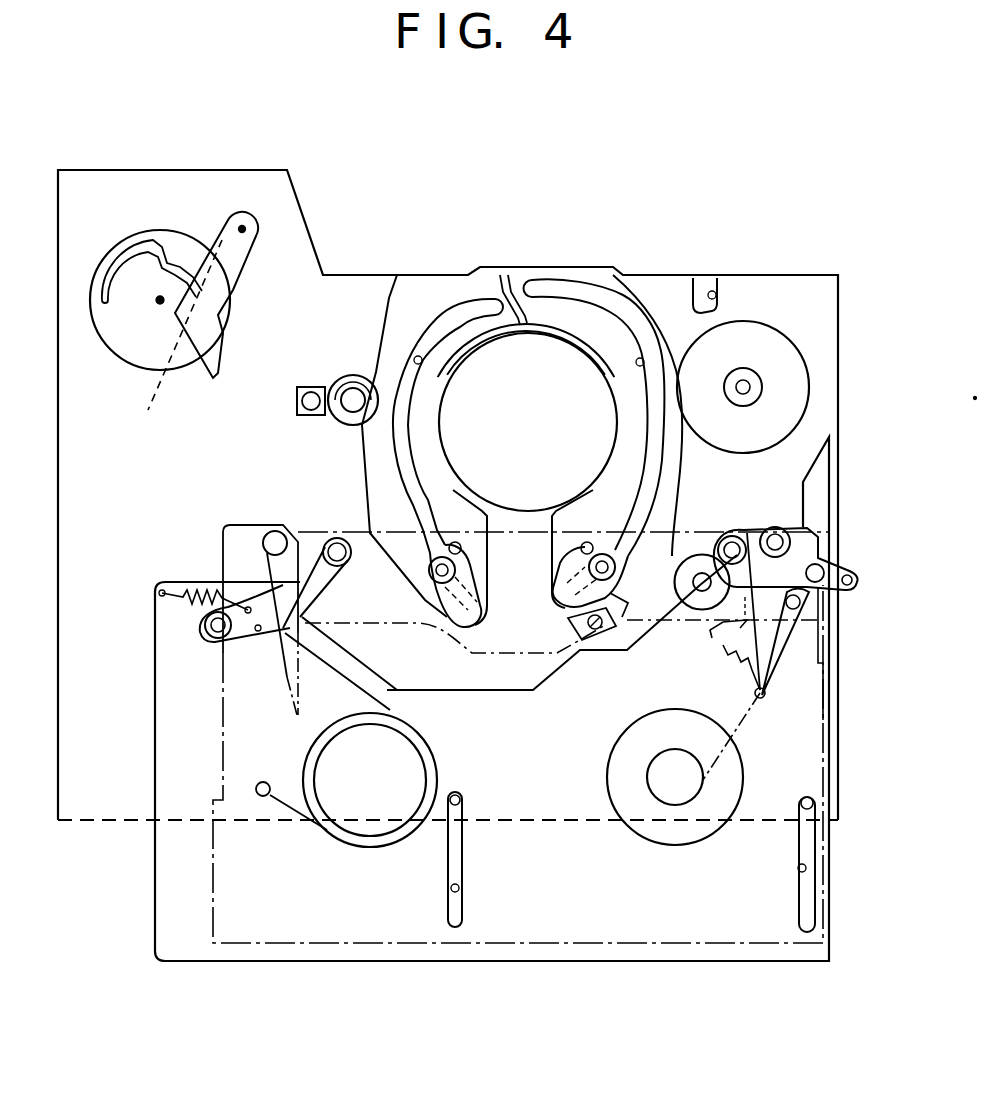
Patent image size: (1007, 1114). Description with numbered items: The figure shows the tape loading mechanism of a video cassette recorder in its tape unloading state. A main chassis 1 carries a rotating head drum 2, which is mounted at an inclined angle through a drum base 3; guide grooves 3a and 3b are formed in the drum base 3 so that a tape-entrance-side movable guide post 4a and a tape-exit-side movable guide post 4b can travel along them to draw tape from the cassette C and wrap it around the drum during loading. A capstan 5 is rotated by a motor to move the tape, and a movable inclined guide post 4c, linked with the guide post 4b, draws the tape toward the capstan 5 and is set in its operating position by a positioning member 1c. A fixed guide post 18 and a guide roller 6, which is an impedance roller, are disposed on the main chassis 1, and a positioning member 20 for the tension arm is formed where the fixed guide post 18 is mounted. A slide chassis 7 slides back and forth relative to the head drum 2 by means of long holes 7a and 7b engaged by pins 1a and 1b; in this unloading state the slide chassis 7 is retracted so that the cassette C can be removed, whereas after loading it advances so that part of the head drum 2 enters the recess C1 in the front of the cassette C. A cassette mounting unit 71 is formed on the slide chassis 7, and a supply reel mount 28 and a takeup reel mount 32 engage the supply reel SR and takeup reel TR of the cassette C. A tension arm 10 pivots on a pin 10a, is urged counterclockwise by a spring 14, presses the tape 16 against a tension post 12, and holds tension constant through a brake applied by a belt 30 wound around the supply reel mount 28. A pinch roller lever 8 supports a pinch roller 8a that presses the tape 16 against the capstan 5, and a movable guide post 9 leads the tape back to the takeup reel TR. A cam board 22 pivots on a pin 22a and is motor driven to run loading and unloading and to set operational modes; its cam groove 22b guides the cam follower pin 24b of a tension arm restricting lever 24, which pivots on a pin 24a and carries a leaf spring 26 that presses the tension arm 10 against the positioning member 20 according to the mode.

The main chassis 1 is at (840, 315).
The pin 1a is at (462, 800).
The pin 1b is at (801, 803).
The positioning member 1c is at (712, 292).
The rotating head drum 2 is at (560, 345).
The drum base 3 is at (418, 290).
The guide groove 3a is at (422, 362).
The guide groove 3b is at (636, 364).
The tape-entrance-side movable guide post 4a is at (458, 566).
The tape-exit-side movable guide post 4b is at (600, 553).
The movable inclined guide post 4c is at (604, 638).
The capstan 5 is at (745, 385).
The guide roller 6 is at (353, 384).
The slide chassis 7 is at (652, 962).
The long hole 7a is at (462, 888).
The long hole 7b is at (800, 870).
The pinch roller lever 8 is at (778, 655).
The pinch roller 8a is at (700, 568).
The movable guide post 9 is at (740, 544).
The tension arm 10 is at (282, 540).
The pin 10a is at (203, 638).
The tension post 12 is at (347, 566).
The spring 14 is at (190, 592).
The tape 16 is at (295, 668).
The fixed guide post 18 is at (311, 412).
The positioning member 20 is at (310, 385).
The cam board 22 is at (162, 236).
The pin 22a is at (156, 308).
The cam groove 22b is at (120, 262).
The tension arm restricting lever 24 is at (238, 218).
The pin 24a is at (245, 226).
The cam follower pin 24b is at (190, 330).
The leaf spring 26 is at (215, 386).
The supply reel mount 28 is at (396, 840).
The belt 30 is at (318, 672).
The takeup reel mount 32 is at (652, 837).
The cassette mounting unit 71 is at (553, 771).
The cassette C is at (717, 944).
The recess C1 is at (497, 640).
The supply reel SR is at (358, 843).
The takeup reel TR is at (678, 795).